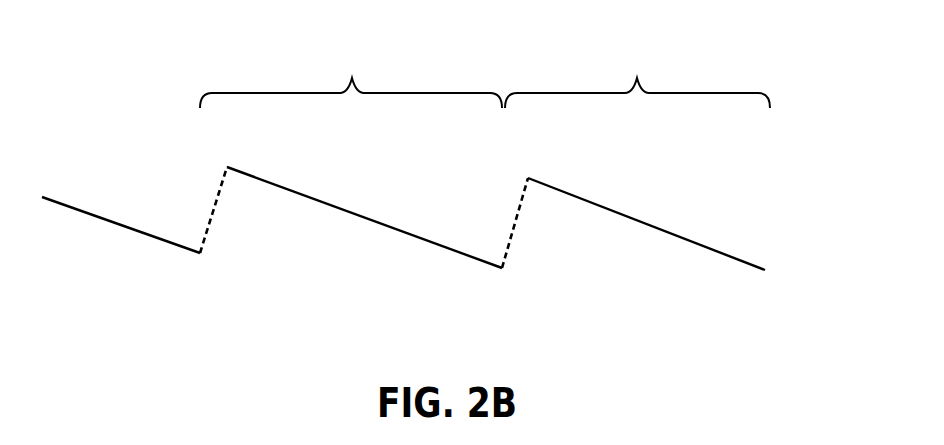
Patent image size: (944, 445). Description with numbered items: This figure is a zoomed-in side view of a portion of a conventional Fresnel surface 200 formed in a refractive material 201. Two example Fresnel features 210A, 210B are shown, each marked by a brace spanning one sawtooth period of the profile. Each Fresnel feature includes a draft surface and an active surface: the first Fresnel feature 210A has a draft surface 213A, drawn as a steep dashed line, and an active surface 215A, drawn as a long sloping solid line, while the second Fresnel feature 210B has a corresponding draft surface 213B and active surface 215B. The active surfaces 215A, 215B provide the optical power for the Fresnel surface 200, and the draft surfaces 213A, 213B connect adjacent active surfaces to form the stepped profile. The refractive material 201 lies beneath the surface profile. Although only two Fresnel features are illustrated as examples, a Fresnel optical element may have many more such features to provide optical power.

The Fresnel surface 200 is at (462, 164).
The refractive material 201 is at (315, 272).
The Fresnel feature 210A is at (351, 80).
The Fresnel feature 210B is at (637, 80).
The draft surface 213A is at (215, 195).
The draft surface 213B is at (518, 195).
The active surface 215A is at (368, 212).
The active surface 215B is at (652, 220).